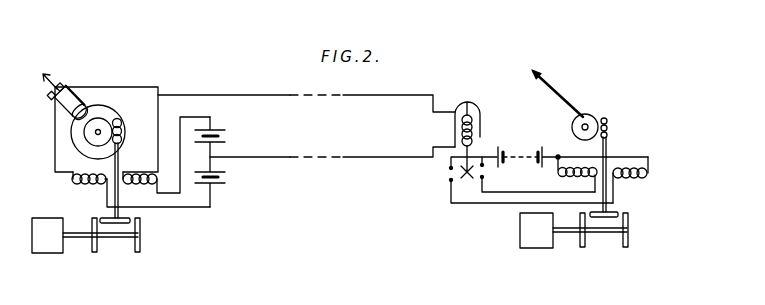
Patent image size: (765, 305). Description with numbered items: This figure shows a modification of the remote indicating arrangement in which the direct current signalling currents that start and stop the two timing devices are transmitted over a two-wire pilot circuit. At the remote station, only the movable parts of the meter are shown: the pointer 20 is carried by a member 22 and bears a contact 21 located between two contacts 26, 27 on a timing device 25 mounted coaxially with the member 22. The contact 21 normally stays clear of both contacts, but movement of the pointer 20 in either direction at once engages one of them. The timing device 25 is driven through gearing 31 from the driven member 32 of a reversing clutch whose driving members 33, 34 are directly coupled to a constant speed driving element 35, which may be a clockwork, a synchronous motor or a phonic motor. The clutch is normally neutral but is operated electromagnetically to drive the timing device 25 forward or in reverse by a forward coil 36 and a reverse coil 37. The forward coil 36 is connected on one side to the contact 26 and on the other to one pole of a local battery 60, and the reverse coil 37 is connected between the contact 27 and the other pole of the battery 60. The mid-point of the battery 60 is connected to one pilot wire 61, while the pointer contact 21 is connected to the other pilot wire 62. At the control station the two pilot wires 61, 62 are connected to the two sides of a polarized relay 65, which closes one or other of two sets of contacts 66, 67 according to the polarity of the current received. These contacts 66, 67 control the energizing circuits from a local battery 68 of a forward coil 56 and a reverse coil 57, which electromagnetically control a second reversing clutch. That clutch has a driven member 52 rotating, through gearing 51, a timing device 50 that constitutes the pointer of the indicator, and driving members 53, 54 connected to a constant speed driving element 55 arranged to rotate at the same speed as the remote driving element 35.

The pointer 20 is at (45, 76).
The contact 21 is at (57, 92).
The member 22 is at (112, 113).
The timing device 25 is at (80, 122).
The contact 26 is at (70, 86).
The contact 27 is at (56, 104).
The gearing 31 is at (131, 138).
The driven member 32 is at (114, 224).
The driving member 33 is at (140, 240).
The driving member 34 is at (96, 246).
The constant speed driving element 35 is at (50, 243).
The forward coil 36 is at (152, 184).
The reverse coil 37 is at (72, 181).
The local battery 60 is at (215, 163).
The pilot wire 61 is at (348, 158).
The pilot wire 62 is at (356, 96).
The polarized relay 65 is at (473, 108).
The set of contacts 66 is at (449, 174).
The set of contacts 67 is at (481, 186).
The local battery 68 is at (522, 152).
The timing device 50 is at (558, 93).
The gearing 51 is at (604, 128).
The driven member 52 is at (596, 219).
The driving member 53 is at (627, 241).
The driving member 54 is at (582, 244).
The constant speed driving element 55 is at (537, 244).
The forward coil 56 is at (632, 168).
The reverse coil 57 is at (577, 168).